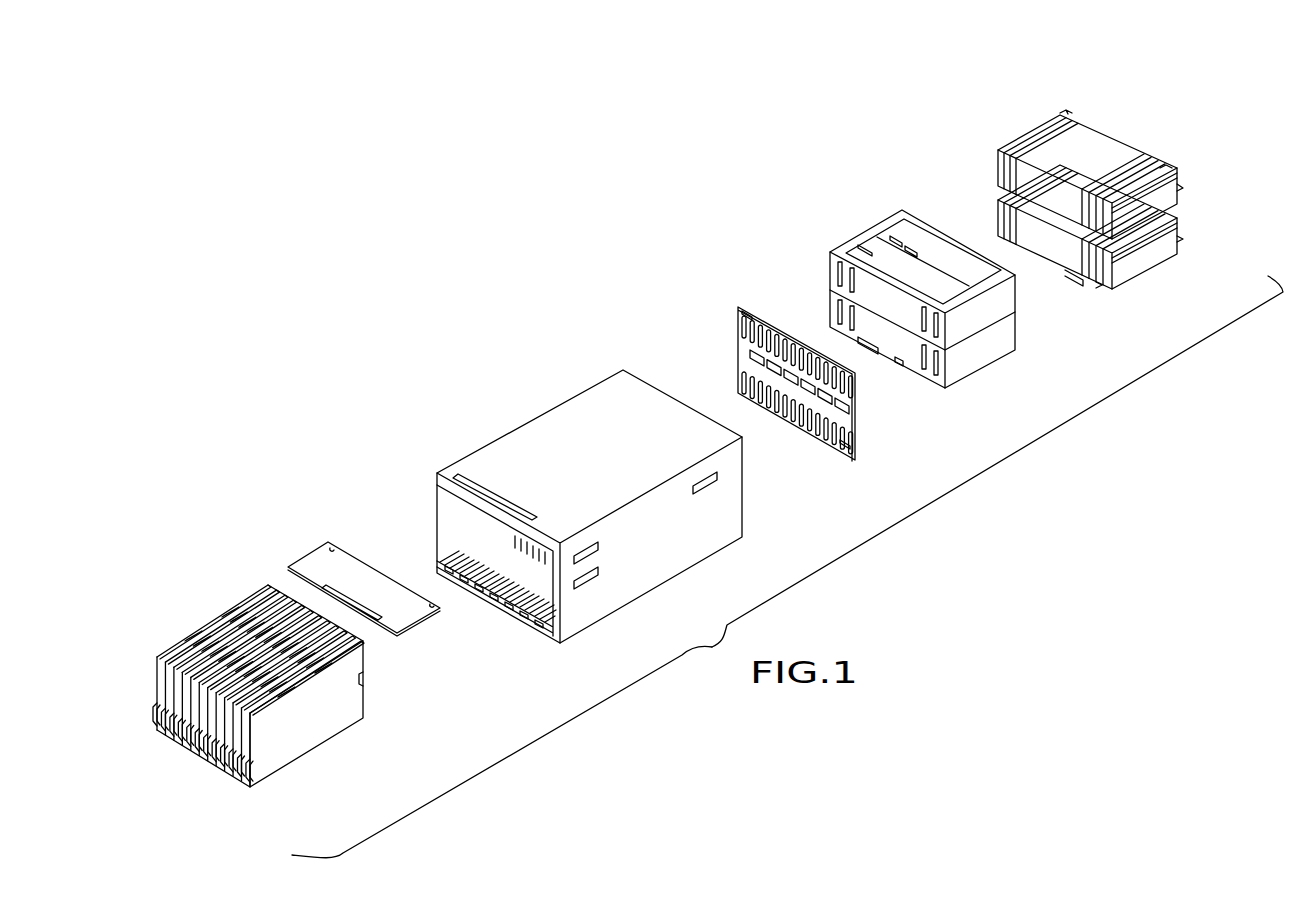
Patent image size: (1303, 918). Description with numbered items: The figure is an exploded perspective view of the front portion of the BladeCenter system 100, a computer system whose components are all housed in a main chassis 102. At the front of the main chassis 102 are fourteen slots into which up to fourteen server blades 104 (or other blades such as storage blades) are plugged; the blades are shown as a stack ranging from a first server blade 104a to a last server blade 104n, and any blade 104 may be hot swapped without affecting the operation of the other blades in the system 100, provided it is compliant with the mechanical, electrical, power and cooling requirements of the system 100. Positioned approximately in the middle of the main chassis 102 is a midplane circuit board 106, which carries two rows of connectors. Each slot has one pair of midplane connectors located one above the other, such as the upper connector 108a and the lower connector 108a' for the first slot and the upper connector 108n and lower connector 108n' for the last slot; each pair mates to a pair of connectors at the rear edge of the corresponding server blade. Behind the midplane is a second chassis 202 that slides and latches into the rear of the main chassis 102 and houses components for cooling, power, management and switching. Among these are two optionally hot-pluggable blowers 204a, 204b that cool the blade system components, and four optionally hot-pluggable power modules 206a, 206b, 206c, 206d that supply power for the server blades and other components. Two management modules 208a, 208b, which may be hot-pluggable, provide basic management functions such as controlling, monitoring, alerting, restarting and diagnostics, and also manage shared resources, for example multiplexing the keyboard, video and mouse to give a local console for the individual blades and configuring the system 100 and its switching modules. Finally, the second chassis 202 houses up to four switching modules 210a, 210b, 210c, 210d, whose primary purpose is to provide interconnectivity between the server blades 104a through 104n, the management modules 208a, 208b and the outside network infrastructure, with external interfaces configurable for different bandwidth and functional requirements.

The BladeCenter system 100 is at (543, 246).
The main chassis 102 is at (541, 420).
The server blades 104 is at (251, 695).
The server blade 104a is at (232, 612).
The server blade 104n is at (287, 745).
The midplane circuit board 106 is at (805, 366).
The midplane connector 108a is at (703, 317).
The midplane connector 108a' is at (700, 365).
The midplane connector 108n is at (899, 406).
The midplane connector 108n' is at (902, 454).
The second chassis 202 is at (862, 242).
The blower 204a is at (1126, 139).
The blower 204b is at (1073, 247).
The power module 206a is at (1078, 115).
The power module 206b is at (995, 250).
The power module 206c is at (1155, 170).
The power module 206d is at (1083, 287).
The management module 208a is at (1070, 115).
The management module 208b is at (998, 197).
The switching module 210a is at (1167, 173).
The switching module 210b is at (1183, 188).
The switching module 210c is at (1100, 292).
The switching module 210d is at (1143, 263).